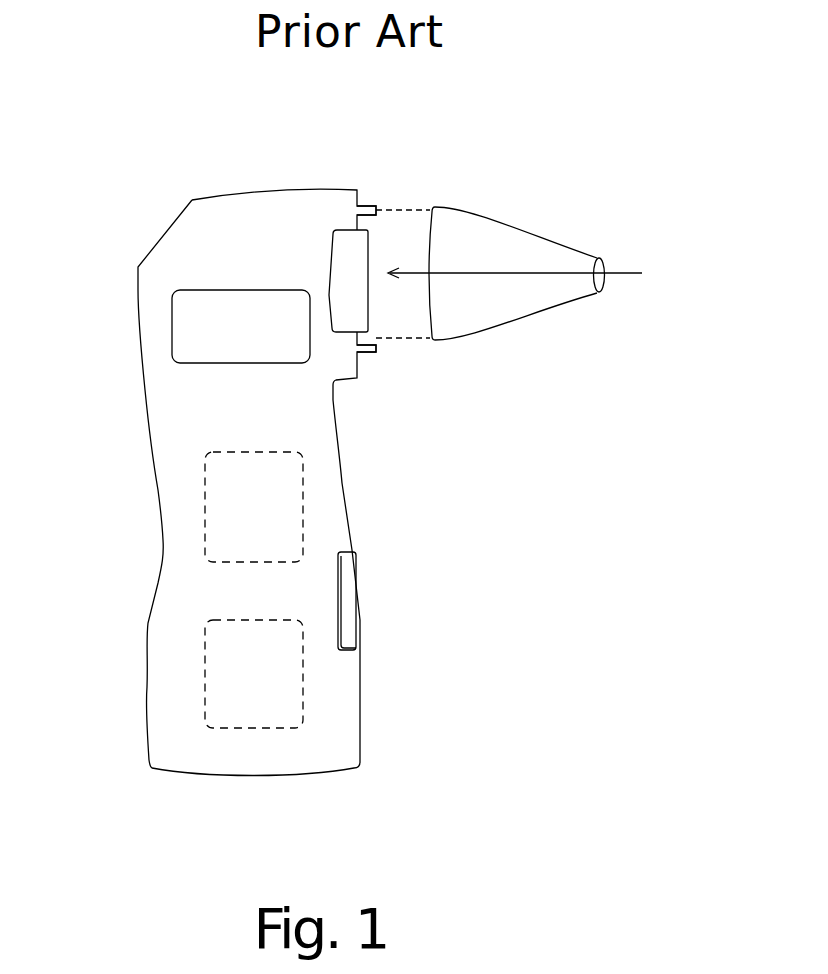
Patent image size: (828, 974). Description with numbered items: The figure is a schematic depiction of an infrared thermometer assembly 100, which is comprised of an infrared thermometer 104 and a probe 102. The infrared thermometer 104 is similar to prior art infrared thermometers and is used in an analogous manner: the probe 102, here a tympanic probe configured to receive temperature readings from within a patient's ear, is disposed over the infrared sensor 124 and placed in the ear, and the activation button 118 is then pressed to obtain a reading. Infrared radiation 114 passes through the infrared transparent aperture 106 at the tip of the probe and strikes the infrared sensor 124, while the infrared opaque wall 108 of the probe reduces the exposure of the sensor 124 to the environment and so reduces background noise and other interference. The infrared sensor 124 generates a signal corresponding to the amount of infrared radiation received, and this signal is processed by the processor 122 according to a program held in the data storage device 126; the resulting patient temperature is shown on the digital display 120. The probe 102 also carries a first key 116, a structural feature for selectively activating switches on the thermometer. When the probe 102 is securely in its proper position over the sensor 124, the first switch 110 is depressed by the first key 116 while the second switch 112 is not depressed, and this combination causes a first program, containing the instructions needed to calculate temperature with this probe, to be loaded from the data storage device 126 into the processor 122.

The infrared thermometer assembly 100 is at (367, 458).
The probe 102 is at (549, 277).
The infrared thermometer 104 is at (342, 732).
The infrared transparent aperture 106 is at (604, 279).
The infrared opaque wall 108 is at (542, 245).
The first switch 110 is at (377, 210).
The second switch 112 is at (376, 352).
The infrared radiation 114 is at (633, 271).
The first key 116 is at (434, 208).
The activation button 118 is at (350, 634).
The digital display 120 is at (183, 321).
The processor 122 is at (205, 491).
The infrared sensor 124 is at (345, 250).
The data storage device 126 is at (205, 660).